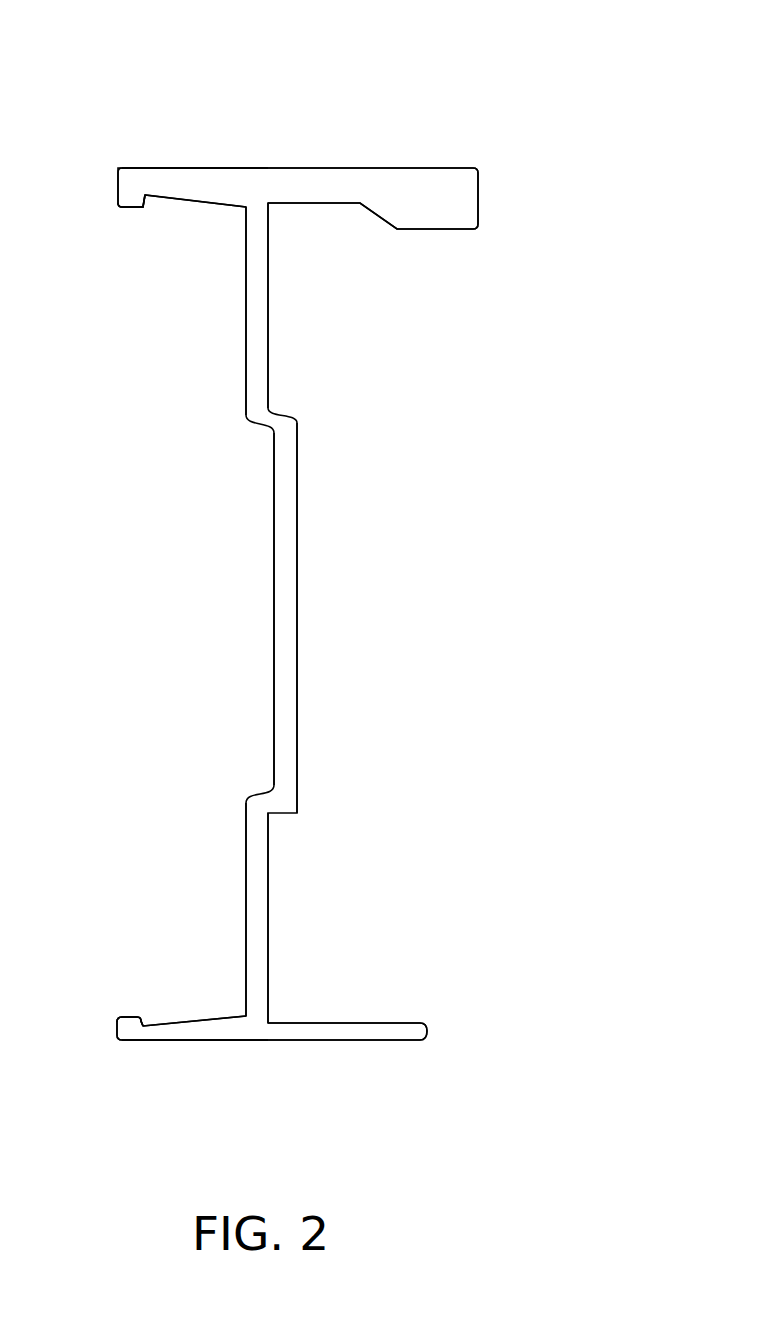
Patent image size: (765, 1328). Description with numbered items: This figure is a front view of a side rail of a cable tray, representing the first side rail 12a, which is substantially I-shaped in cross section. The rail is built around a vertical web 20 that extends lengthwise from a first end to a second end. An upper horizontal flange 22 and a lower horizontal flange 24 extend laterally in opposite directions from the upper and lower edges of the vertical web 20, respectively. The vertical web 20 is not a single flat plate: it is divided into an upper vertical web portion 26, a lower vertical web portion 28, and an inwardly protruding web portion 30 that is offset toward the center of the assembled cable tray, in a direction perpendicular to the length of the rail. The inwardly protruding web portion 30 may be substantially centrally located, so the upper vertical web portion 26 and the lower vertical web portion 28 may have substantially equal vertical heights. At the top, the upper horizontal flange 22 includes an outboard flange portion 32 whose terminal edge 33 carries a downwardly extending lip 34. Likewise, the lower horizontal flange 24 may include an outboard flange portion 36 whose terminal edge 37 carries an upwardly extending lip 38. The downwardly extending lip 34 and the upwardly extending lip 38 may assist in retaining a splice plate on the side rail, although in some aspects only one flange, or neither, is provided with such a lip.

The first side rail 12a is at (262, 40).
The vertical web 20 is at (297, 475).
The upper horizontal flange 22 is at (331, 168).
The lower horizontal flange 24 is at (315, 1042).
The upper vertical web portion 26 is at (257, 325).
The lower vertical web portion 28 is at (258, 922).
The inwardly protruding web portion 30 is at (287, 625).
The outboard flange portion 32 is at (201, 168).
The terminal edge 33 is at (125, 168).
The downwardly extending lip 34 is at (128, 210).
The outboard flange portion 36 is at (206, 1030).
The terminal edge 37 is at (128, 1034).
The upwardly extending lip 38 is at (128, 1017).